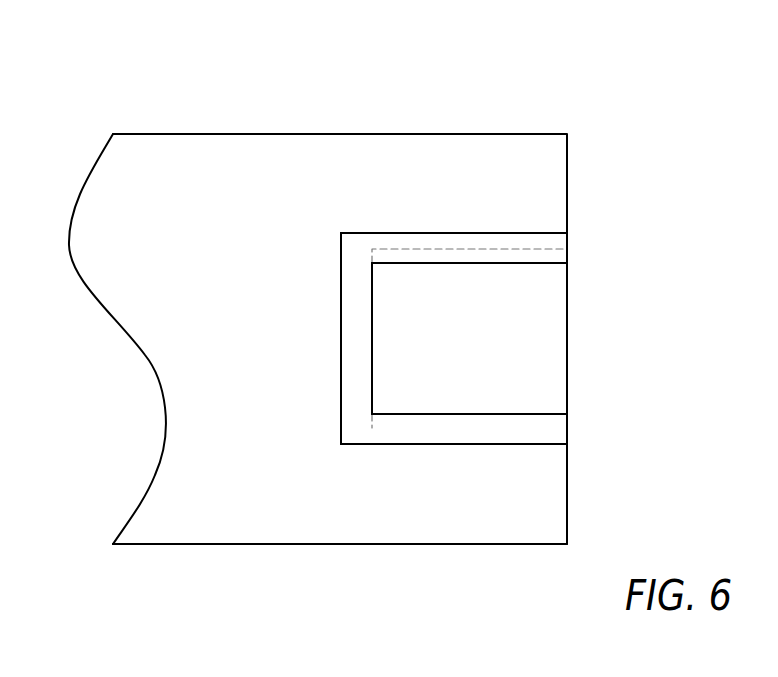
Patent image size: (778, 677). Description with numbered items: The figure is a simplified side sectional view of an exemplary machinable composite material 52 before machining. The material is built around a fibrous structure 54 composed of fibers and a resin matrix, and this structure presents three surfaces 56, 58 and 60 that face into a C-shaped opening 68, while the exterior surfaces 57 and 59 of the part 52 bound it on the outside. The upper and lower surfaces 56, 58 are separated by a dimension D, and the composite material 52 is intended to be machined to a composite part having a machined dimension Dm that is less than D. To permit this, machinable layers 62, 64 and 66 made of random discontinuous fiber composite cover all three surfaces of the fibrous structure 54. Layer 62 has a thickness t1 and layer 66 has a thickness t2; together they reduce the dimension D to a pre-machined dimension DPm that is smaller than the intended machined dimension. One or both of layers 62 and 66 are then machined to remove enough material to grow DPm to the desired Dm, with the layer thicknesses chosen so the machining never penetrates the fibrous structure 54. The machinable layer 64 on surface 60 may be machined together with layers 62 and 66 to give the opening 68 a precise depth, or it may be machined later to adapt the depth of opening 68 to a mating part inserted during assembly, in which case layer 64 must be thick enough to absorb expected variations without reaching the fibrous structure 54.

The machinable composite material 52 is at (220, 106).
The fibrous structure 54 is at (209, 492).
The surface 56 is at (430, 236).
The exterior surface 57 is at (422, 135).
The surface 58 is at (422, 442).
The exterior surface 59 is at (308, 545).
The surface 60 is at (343, 417).
The machinable layer 62 is at (460, 243).
The machinable layer 64 is at (346, 316).
The machinable layer 66 is at (500, 434).
The opening 68 is at (404, 385).
The thickness of machinable layer 62 t1 is at (533, 242).
The thickness of machinable layer 66 t2 is at (540, 436).
The dimension between surfaces D is at (573, 233).
The machined dimension Dm is at (601, 427).
The pre-machined dimension DPm is at (469, 412).